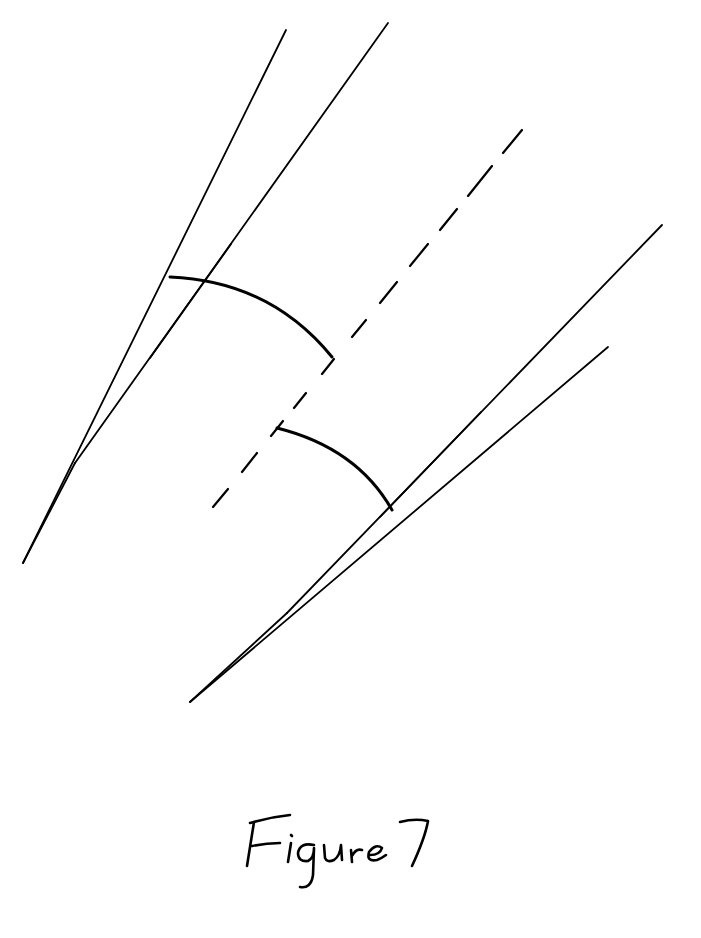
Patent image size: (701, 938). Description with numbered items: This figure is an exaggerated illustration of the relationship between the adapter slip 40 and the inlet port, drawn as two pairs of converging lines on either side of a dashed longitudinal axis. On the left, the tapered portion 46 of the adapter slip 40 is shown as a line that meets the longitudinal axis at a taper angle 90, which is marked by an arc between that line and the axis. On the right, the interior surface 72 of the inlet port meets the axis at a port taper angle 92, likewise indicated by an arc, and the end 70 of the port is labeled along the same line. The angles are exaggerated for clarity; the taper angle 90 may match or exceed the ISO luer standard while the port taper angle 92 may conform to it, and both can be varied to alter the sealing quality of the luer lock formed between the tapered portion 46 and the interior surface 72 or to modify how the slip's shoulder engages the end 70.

The adapter slip 40 is at (315, 127).
The tapered portion 46 is at (236, 243).
The end 70 is at (217, 157).
The interior surface 72 is at (150, 296).
The taper angle 90 is at (377, 470).
The port taper angle 92 is at (268, 300).